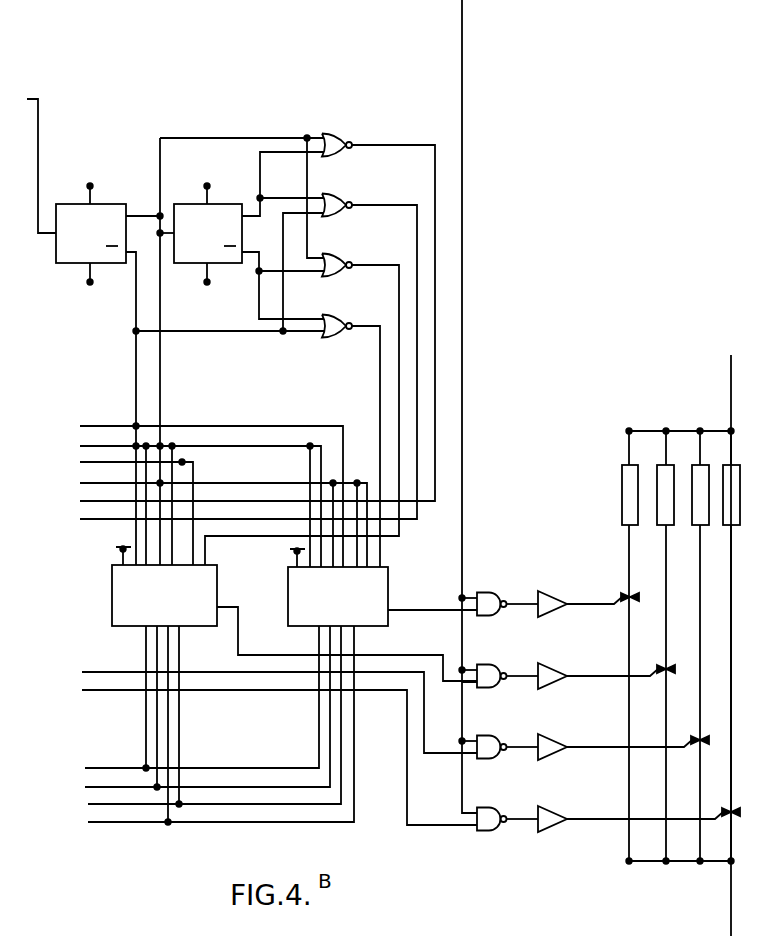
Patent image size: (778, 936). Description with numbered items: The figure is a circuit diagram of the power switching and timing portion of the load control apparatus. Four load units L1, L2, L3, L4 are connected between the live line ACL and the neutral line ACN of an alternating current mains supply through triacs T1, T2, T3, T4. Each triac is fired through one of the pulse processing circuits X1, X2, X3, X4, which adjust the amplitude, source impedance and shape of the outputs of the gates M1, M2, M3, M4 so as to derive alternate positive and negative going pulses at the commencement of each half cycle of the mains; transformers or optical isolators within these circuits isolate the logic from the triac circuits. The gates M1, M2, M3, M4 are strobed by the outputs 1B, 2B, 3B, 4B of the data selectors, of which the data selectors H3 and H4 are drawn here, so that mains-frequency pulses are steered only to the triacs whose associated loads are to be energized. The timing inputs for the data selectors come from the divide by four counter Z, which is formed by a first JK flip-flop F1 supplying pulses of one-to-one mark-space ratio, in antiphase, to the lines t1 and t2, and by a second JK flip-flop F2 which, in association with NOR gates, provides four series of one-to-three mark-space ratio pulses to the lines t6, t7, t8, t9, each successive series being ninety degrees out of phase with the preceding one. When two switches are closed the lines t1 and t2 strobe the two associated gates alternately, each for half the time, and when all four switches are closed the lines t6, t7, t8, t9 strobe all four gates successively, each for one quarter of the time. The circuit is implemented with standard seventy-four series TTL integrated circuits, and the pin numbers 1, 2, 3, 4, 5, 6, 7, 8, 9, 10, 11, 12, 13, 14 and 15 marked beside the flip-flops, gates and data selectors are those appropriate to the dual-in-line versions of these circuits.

The integrated circuit pin 1 is at (183, 552).
The integrated circuit pin 2 is at (93, 196).
The integrated circuit pin 3 is at (93, 277).
The integrated circuit pin 4 is at (207, 563).
The integrated circuit pin 5 is at (393, 586).
The integrated circuit pin 6 is at (166, 238).
The integrated circuit pin 7 is at (210, 196).
The integrated circuit pin 8 is at (210, 277).
The integrated circuit pin 9 is at (278, 486).
The integrated circuit pin 10 is at (246, 452).
The integrated circuit pin 11 is at (250, 210).
The integrated circuit pin 12 is at (318, 253).
The integrated circuit pin 13 is at (101, 530).
The integrated circuit pin 14 is at (313, 575).
The integrated circuit pin 15 is at (189, 584).
The first JK flip-flop F1 is at (91, 234).
The JK flip-flop F2 is at (208, 234).
The data selector H3 is at (164, 693).
The data selector H4 is at (236, 696).
The divide by four counter Z is at (209, 128).
The gate M1 is at (491, 798).
The gate M2 is at (491, 726).
The gate M3 is at (491, 655).
The gate M4 is at (490, 583).
The pulse processing circuit X1 is at (550, 815).
The pulse processing circuit X2 is at (550, 743).
The pulse processing circuit X3 is at (550, 672).
The pulse processing circuit X4 is at (550, 600).
The triac T1 is at (721, 802).
The triac T2 is at (691, 730).
The triac T3 is at (656, 659).
The triac T4 is at (620, 586).
The load unit L1 is at (731, 646).
The load unit L2 is at (700, 646).
The load unit L3 is at (665, 646).
The load unit L4 is at (630, 646).
The data selector output 1B is at (408, 813).
The data selector output 2B is at (426, 738).
The data selector output 3B is at (440, 653).
The data selector output 4B is at (436, 610).
The timing line t1 is at (135, 367).
The timing line t2 is at (160, 360).
The timing line t6 is at (379, 354).
The timing line t7 is at (398, 403).
The timing line t8 is at (433, 398).
The timing line t9 is at (435, 464).
The live line ACL is at (680, 420).
The neutral line ACN is at (680, 872).